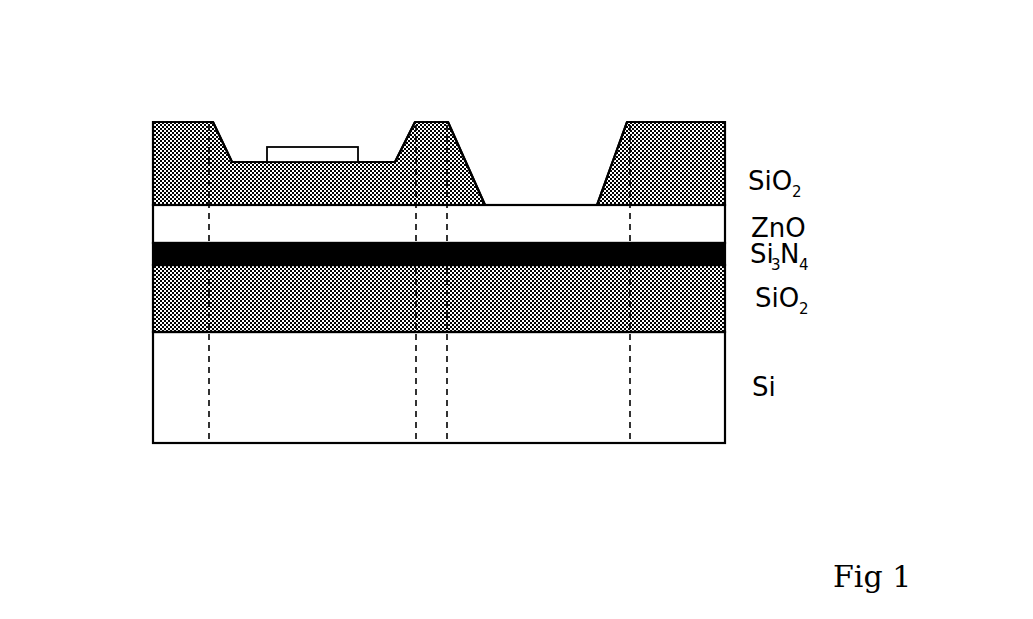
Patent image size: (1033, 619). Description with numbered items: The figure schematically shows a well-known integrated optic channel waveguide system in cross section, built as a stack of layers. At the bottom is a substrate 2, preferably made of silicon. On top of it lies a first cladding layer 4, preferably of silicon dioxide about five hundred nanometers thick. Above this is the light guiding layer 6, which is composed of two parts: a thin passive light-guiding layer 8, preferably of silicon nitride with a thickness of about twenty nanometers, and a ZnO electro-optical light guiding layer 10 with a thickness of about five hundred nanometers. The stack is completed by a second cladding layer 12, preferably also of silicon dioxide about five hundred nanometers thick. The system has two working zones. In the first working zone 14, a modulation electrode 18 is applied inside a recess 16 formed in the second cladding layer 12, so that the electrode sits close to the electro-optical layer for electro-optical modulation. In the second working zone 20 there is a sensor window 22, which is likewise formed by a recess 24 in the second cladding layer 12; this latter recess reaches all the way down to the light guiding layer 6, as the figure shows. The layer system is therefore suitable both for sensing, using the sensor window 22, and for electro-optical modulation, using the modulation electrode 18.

The substrate 2 is at (190, 398).
The first cladding layer 4 is at (188, 310).
The light guiding layer 6 is at (468, 240).
The passive light-guiding layer 8 is at (727, 257).
The ZnO electro-optical light guiding layer 10 is at (727, 217).
The second cladding layer 12 is at (178, 164).
The first working zone 14 is at (303, 425).
The recess 16 is at (247, 138).
The modulation electrode 18 is at (334, 150).
The second working zone 20 is at (543, 417).
The sensor window 22 is at (556, 184).
The recess 24 is at (481, 132).